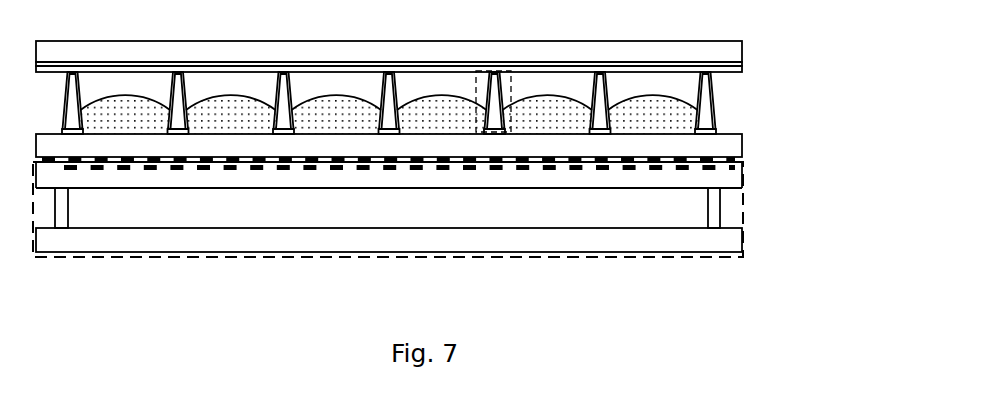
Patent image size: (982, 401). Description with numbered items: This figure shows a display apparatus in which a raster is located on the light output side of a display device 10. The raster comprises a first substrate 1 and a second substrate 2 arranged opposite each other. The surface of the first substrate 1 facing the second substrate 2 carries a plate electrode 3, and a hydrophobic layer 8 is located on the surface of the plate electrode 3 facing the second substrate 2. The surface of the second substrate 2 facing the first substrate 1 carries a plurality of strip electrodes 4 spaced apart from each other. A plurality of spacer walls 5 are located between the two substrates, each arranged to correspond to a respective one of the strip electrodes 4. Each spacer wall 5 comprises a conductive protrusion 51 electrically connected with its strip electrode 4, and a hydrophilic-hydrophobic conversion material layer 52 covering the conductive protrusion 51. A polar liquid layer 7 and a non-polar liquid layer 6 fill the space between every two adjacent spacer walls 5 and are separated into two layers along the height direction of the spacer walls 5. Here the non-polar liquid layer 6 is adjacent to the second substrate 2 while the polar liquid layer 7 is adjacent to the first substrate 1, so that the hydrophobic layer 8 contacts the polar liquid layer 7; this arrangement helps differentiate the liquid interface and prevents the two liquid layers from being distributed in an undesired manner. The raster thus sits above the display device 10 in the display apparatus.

The first substrate 1 is at (742, 43).
The plate electrode 3 is at (742, 62).
The hydrophobic layer 8 is at (742, 72).
The polar liquid layer 7 is at (624, 92).
The non-polar liquid layer 6 is at (626, 125).
The spacer wall 5 is at (436, 102).
The hydrophilic-hydrophobic conversion material layer 52 is at (713, 93).
The conductive protrusion 51 is at (703, 118).
The second substrate 2 is at (742, 149).
The strip electrodes 4 is at (436, 195).
The display device 10 is at (742, 230).